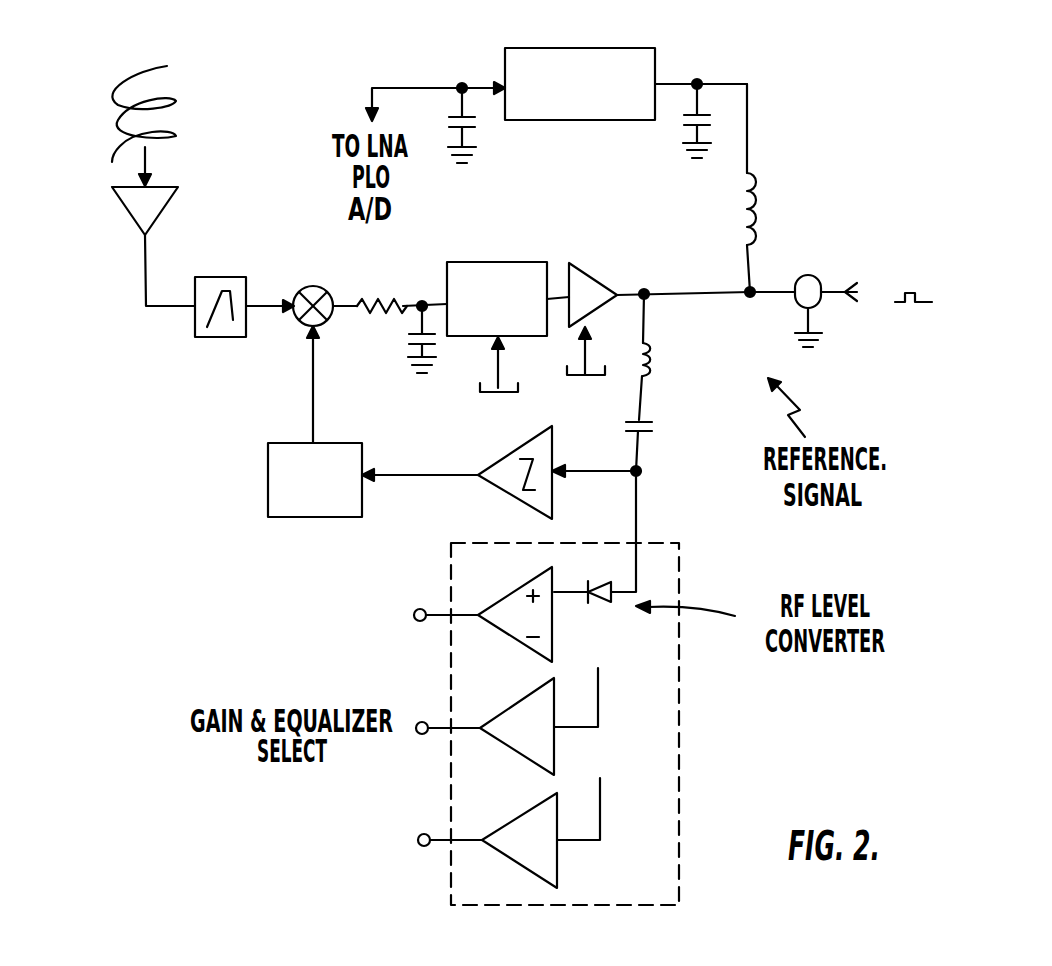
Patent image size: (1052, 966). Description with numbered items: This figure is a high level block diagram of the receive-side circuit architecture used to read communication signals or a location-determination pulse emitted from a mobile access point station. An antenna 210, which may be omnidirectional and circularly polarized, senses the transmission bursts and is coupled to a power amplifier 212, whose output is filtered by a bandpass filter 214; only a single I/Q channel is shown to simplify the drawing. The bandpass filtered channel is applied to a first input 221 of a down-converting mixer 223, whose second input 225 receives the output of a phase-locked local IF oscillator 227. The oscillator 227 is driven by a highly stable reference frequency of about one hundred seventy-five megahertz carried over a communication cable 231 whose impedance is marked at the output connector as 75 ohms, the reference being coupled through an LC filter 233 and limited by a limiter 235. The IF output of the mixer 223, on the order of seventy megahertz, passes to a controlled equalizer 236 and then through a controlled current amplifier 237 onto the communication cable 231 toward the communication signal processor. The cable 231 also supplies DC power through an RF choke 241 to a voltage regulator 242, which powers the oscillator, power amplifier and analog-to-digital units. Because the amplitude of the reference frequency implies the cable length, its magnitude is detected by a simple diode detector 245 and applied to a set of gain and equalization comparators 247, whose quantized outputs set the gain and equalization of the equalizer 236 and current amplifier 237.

The antenna 210 is at (176, 101).
The power amplifier 212 is at (126, 210).
The bandpass filter 214 is at (222, 338).
The first input 221 is at (293, 300).
The down-converting mixer 223 is at (305, 284).
The second input 225 is at (308, 326).
The phase-locked local IF oscillator 227 is at (268, 478).
The communication cable 231 is at (693, 290).
The LC filter 233 is at (656, 346).
The limiter 235 is at (492, 456).
The controlled equalizer 236 is at (500, 262).
The controlled current amplifier 237 is at (612, 250).
The RF choke 241 is at (746, 200).
The voltage regulator 242 is at (628, 48).
The diode detector 245 is at (596, 565).
The gain and equalization comparators 247 is at (617, 805).
The output signal 75 is at (838, 311).